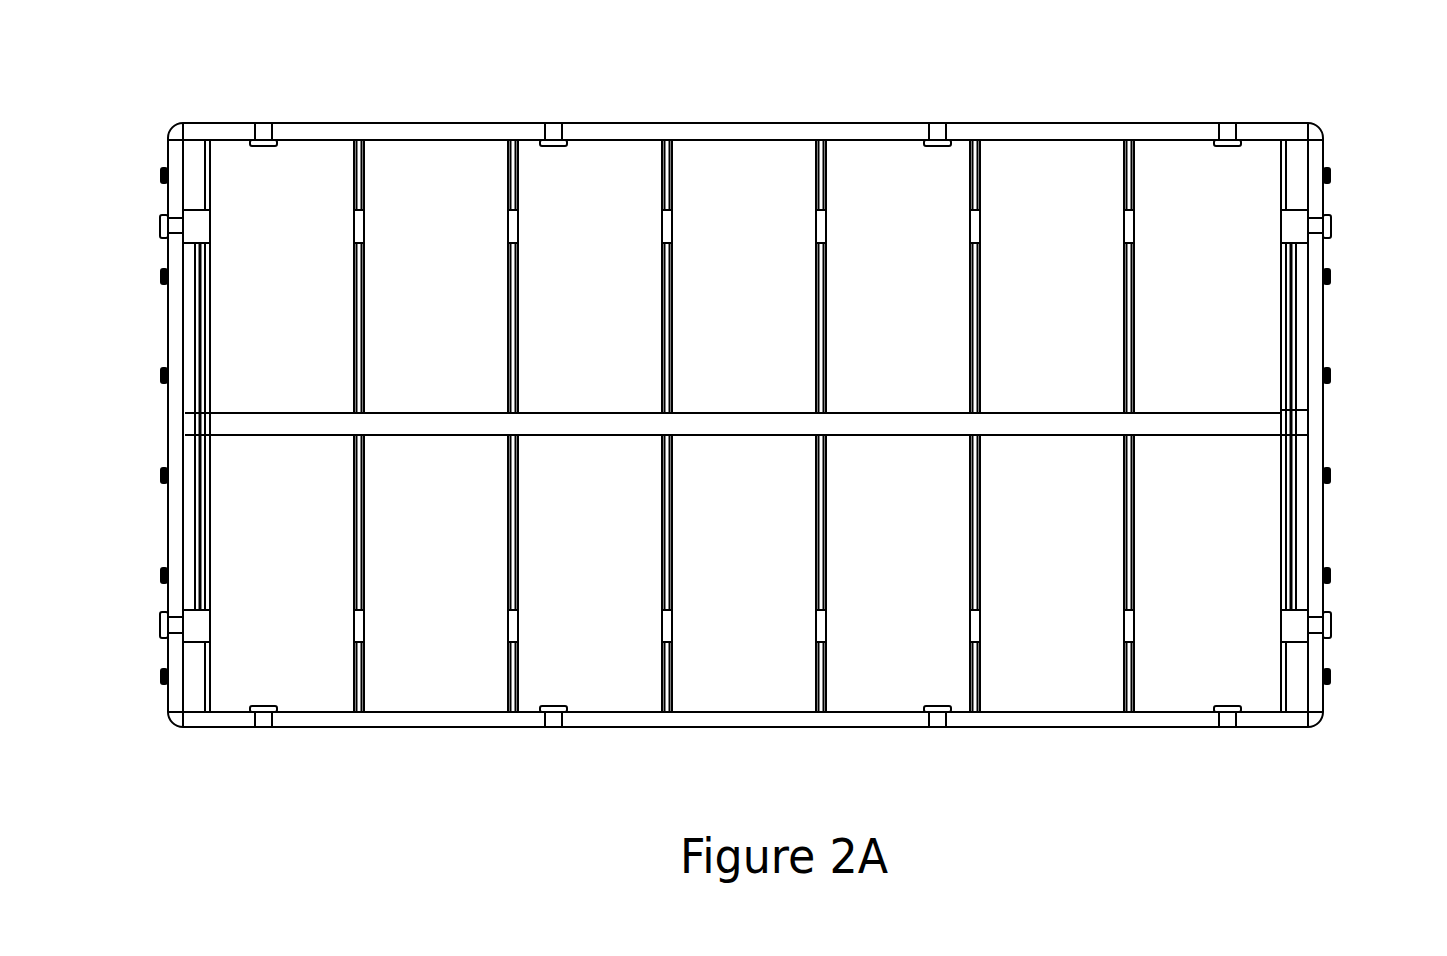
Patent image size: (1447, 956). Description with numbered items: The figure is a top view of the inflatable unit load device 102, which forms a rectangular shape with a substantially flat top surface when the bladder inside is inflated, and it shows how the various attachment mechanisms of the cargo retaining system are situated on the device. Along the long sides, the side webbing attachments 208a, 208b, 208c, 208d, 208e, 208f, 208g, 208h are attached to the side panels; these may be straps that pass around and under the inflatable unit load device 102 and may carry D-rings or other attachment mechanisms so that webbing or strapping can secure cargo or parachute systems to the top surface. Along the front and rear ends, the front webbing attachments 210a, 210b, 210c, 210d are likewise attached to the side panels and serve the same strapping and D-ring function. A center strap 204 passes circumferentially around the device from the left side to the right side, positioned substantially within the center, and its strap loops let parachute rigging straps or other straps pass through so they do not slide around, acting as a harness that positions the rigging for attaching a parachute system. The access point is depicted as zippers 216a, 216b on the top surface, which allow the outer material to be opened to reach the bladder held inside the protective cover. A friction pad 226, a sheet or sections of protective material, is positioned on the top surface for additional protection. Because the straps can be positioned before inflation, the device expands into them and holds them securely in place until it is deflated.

The inflatable unit load device 102 is at (242, 81).
The center strap 204 is at (213, 427).
The friction pad 226 is at (695, 167).
The zipper 216a is at (200, 543).
The zipper 216b is at (1290, 506).
The front webbing attachment 210a is at (160, 622).
The front webbing attachment 210b is at (160, 226).
The front webbing attachment 210c is at (1331, 622).
The front webbing attachment 210d is at (1331, 226).
The side webbing attachment 208a is at (264, 727).
The side webbing attachment 208b is at (553, 727).
The side webbing attachment 208c is at (937, 727).
The side webbing attachment 208d is at (1227, 727).
The side webbing attachment 208e is at (264, 123).
The side webbing attachment 208f is at (553, 123).
The side webbing attachment 208g is at (937, 123).
The side webbing attachment 208h is at (1227, 123).